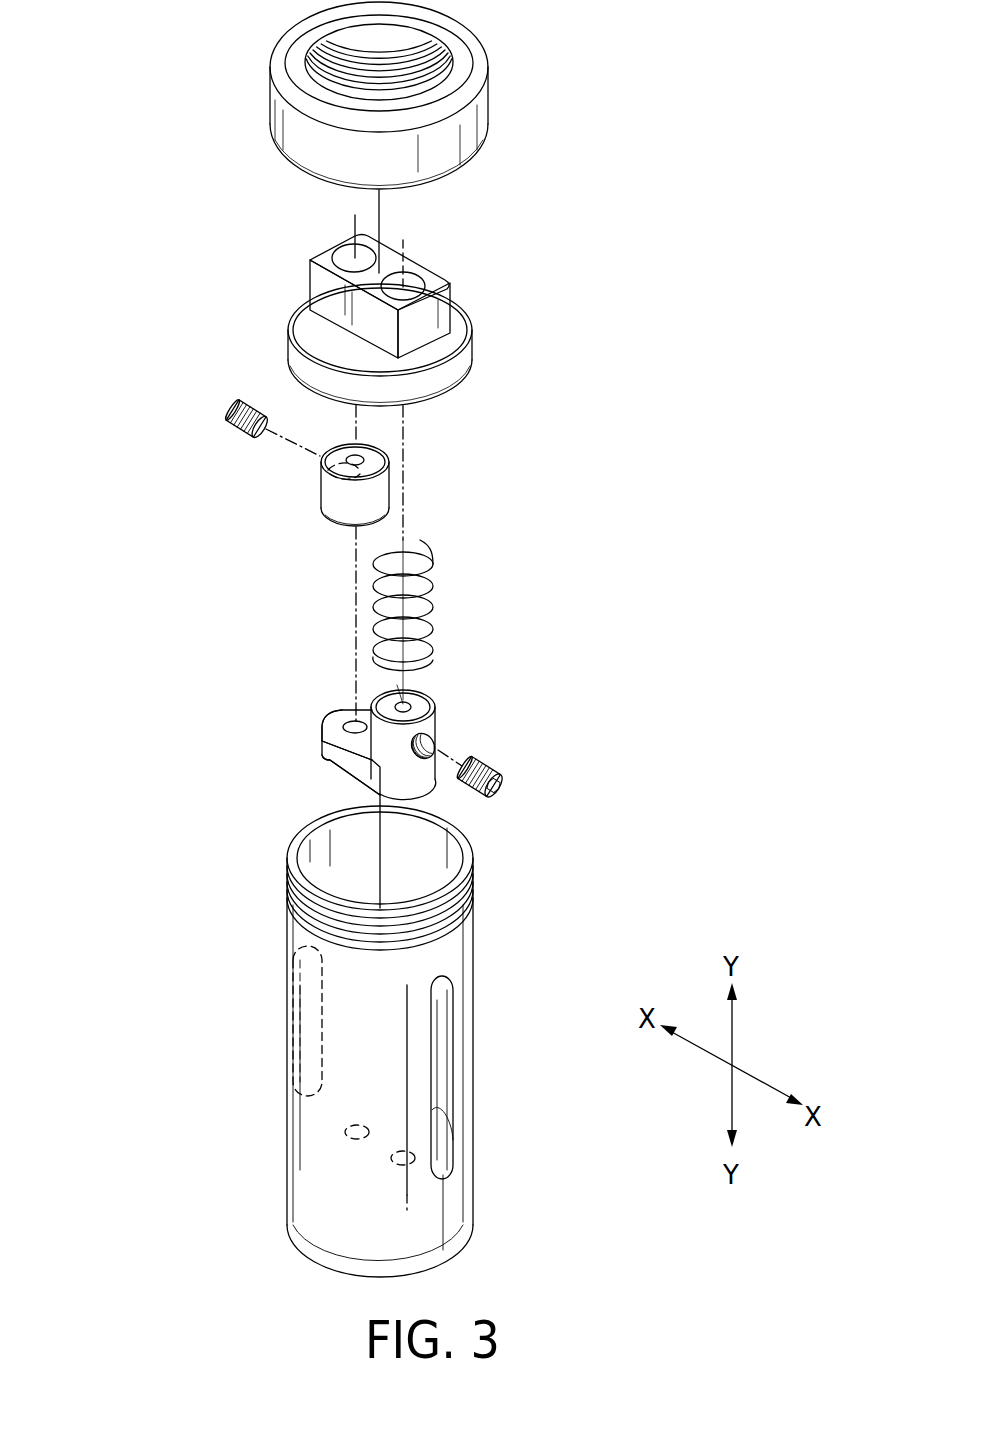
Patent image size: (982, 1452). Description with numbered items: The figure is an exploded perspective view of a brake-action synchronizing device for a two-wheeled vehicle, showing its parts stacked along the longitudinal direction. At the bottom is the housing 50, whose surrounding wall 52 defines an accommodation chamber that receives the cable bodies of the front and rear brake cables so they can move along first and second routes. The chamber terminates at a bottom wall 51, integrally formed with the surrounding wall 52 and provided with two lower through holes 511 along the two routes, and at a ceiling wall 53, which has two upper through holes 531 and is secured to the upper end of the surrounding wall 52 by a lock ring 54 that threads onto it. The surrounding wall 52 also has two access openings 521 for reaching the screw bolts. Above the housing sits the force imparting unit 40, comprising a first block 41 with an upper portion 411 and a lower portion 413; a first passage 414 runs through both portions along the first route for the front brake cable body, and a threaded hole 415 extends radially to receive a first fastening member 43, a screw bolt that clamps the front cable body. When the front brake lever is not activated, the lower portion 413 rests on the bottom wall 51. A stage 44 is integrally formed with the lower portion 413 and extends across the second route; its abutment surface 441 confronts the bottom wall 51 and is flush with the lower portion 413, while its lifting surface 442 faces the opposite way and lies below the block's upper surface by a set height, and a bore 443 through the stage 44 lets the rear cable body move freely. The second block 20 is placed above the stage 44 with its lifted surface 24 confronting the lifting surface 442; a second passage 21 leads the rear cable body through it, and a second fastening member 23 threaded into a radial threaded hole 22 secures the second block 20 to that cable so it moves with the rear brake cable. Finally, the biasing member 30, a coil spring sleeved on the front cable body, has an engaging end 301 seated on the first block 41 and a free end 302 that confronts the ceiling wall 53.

The housing 50 is at (248, 62).
The lock ring 54 is at (483, 115).
The ceiling wall 53 is at (447, 310).
The upper through holes 531 is at (342, 258).
The bottom wall 51 is at (455, 1140).
The lower through holes 511 is at (348, 1132).
The surrounding wall 52 is at (470, 948).
The access openings 521 is at (300, 1000).
The second block 20 is at (310, 518).
The second passage 21 is at (353, 452).
The threaded hole 22 is at (322, 488).
The second fastening member 23 is at (228, 408).
The lifted surface 24 is at (347, 524).
The biasing member 30 is at (448, 578).
The engaging end 301 is at (362, 682).
The free end 302 is at (408, 542).
The force imparting unit 40 is at (458, 706).
The first block 41 is at (440, 757).
The upper portion 411 is at (437, 708).
The lower portion 413 is at (433, 790).
The first passage 414 is at (403, 705).
The threaded hole 415 is at (438, 747).
The first fastening member 43 is at (497, 785).
The stage 44 is at (322, 742).
The abutment surface 441 is at (342, 770).
The lifting surface 442 is at (348, 710).
The bore 443 is at (345, 727).